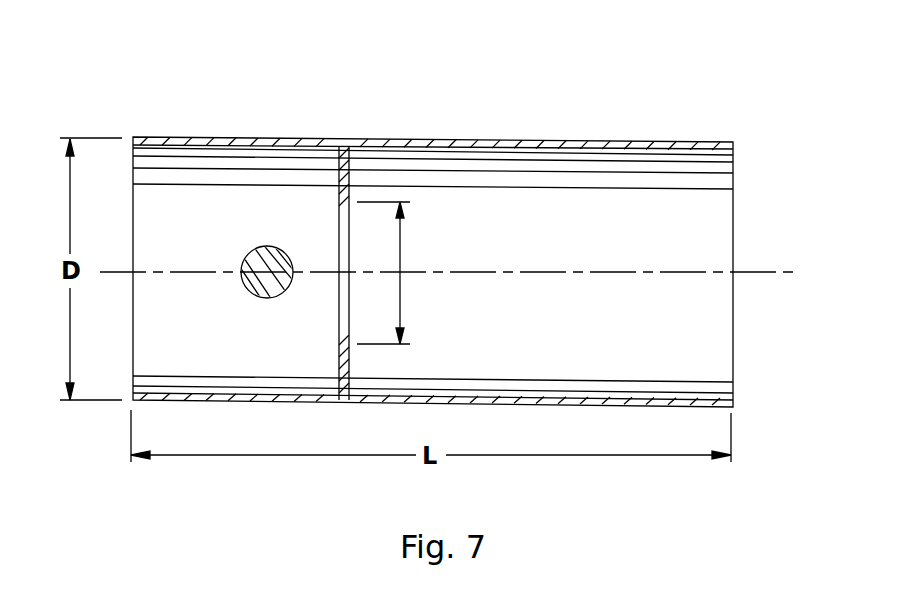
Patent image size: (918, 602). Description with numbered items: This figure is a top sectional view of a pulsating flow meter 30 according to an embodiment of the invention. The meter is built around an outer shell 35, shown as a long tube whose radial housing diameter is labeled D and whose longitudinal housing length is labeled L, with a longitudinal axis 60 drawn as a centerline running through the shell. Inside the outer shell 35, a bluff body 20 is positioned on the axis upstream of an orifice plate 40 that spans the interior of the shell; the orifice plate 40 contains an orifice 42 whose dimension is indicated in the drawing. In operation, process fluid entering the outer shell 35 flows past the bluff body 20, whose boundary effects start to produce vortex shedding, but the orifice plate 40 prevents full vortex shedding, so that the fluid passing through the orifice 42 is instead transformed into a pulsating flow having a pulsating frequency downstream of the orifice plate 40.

The pulsating flow meter 30 is at (118, 80).
The outer shell 35 is at (520, 138).
The longitudinal axis 60 is at (768, 272).
The bluff body 20 is at (247, 289).
The orifice plate 40 is at (338, 353).
The orifice 42 is at (400, 248).